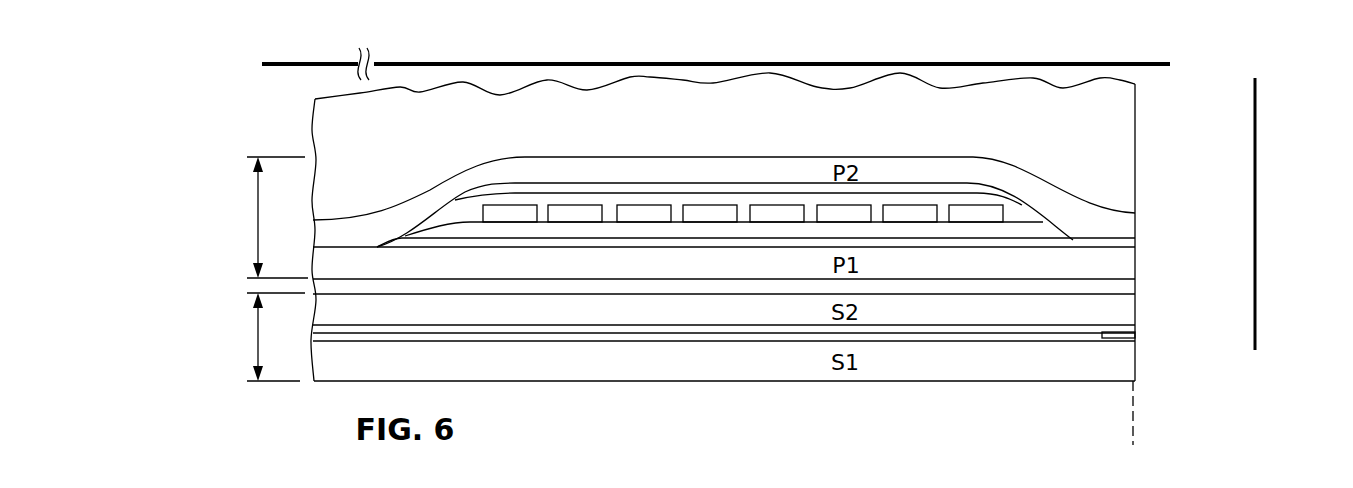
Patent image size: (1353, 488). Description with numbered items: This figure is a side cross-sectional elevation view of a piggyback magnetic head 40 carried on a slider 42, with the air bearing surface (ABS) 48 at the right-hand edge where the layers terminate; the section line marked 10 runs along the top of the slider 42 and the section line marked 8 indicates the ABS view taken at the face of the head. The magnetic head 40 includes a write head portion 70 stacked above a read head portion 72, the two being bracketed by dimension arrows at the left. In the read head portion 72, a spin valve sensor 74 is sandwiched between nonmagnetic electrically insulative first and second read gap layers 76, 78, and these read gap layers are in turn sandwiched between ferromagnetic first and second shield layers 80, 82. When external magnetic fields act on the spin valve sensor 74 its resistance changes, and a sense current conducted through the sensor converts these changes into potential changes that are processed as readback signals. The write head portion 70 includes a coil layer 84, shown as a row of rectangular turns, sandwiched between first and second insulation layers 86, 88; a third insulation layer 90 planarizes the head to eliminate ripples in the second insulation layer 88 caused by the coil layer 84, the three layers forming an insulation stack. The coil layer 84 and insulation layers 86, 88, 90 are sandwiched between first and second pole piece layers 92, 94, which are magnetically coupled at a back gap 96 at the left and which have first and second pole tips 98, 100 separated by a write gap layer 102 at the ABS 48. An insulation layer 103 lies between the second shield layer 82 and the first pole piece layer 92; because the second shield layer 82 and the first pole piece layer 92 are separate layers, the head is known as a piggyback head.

The section line 10-10 / magnetic disk 10 is at (1162, 52).
The section line 8- 8 is at (1268, 342).
The magnetic head 40 is at (292, 108).
The slider 42 is at (1118, 113).
The air bearing surface 48 is at (1135, 437).
The write head portion 70 is at (258, 222).
The read head portion 72 is at (258, 341).
The spin valve sensor 74 is at (1135, 335).
The first read gap layer 76 is at (792, 342).
The second read gap layer 78 is at (758, 326).
The first shield layer 80 is at (895, 365).
The second shield layer 82 is at (1003, 313).
The coil layer 84 is at (775, 210).
The first insulation layer 86 is at (680, 232).
The second insulation layer 88 is at (1020, 215).
The third insulation layer 90 is at (552, 192).
The first pole piece layer 92 is at (1052, 268).
The second pole piece layer 94 is at (910, 170).
The back gap 96 is at (354, 247).
The first pole tip 98 is at (1135, 268).
The second pole tip 100 is at (1128, 222).
The write gap layer 102 is at (1135, 244).
The insulation layer 103 is at (955, 288).